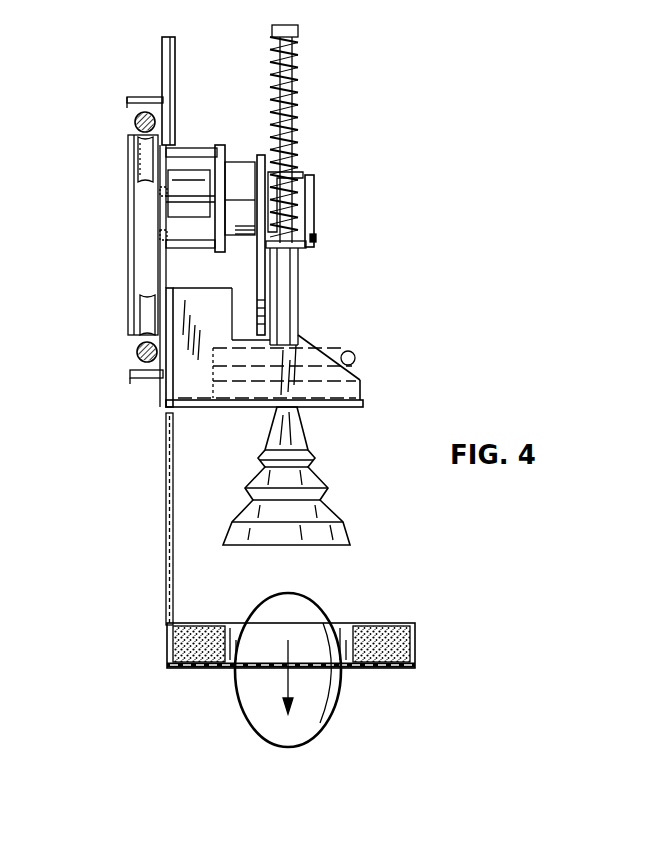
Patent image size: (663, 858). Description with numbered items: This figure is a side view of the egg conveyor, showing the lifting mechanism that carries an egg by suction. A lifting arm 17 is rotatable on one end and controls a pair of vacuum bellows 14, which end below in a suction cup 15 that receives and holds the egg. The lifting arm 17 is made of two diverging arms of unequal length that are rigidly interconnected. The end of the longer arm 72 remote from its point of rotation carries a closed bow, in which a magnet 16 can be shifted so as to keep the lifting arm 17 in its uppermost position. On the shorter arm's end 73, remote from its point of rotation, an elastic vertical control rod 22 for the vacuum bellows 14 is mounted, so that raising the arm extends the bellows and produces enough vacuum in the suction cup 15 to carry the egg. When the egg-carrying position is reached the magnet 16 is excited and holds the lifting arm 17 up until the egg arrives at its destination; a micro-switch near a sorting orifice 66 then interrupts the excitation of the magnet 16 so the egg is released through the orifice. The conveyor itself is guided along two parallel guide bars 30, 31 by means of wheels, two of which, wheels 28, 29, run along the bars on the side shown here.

The vacuum bellows 14 is at (341, 352).
The suction cup 15 is at (315, 455).
The magnet 16 is at (282, 176).
The lifting arm 17 is at (320, 207).
The elastic vertical control rod 22 is at (298, 77).
The wheel 28 is at (138, 168).
The wheel 29 is at (142, 307).
The guide bar 30 is at (134, 122).
The guide bar 31 is at (137, 356).
The sorting orifice 66 is at (342, 640).
The longer arm 72 is at (260, 275).
The shorter arm's end 73 is at (314, 217).